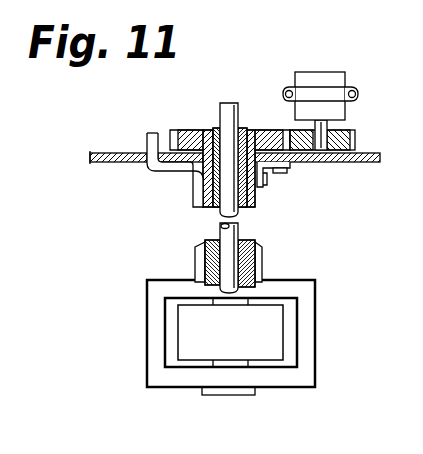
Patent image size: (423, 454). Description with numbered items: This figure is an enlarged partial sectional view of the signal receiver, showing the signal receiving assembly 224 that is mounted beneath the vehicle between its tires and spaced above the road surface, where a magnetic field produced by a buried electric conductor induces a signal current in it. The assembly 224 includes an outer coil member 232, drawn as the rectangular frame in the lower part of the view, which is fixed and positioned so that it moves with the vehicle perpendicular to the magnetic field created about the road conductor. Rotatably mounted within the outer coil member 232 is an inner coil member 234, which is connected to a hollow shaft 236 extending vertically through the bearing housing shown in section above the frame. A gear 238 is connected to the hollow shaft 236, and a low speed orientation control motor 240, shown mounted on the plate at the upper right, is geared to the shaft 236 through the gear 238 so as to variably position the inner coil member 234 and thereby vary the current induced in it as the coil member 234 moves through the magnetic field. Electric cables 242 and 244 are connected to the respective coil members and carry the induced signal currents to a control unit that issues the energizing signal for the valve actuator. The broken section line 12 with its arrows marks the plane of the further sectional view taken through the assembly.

The signal receiving assembly 224 is at (349, 224).
The gear 238 is at (190, 128).
The electric cable 244 is at (236, 121).
The low speed orientation control motor 240 is at (331, 78).
The electric cable 242 is at (168, 171).
The hollow shaft 236 is at (257, 190).
The outer coil member 232 is at (310, 338).
The inner coil member 234 is at (210, 345).
The section line 12 is at (273, 247).